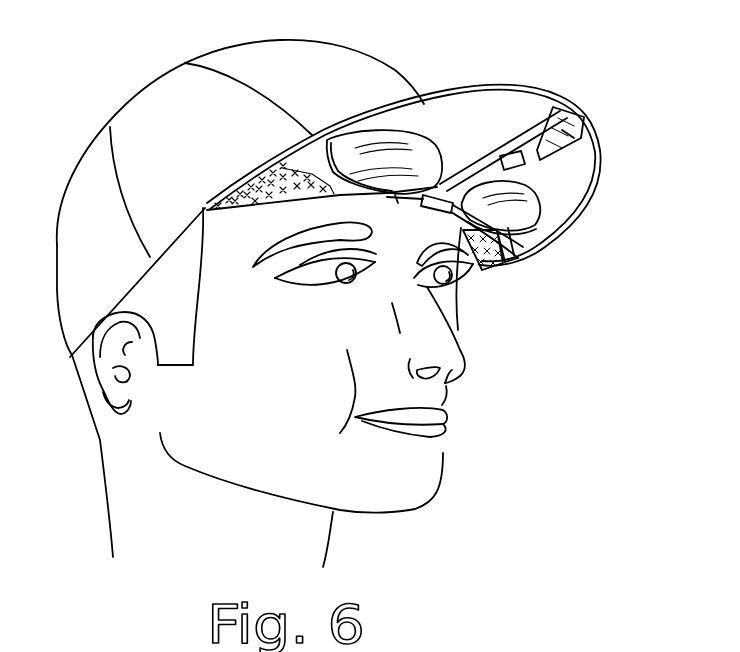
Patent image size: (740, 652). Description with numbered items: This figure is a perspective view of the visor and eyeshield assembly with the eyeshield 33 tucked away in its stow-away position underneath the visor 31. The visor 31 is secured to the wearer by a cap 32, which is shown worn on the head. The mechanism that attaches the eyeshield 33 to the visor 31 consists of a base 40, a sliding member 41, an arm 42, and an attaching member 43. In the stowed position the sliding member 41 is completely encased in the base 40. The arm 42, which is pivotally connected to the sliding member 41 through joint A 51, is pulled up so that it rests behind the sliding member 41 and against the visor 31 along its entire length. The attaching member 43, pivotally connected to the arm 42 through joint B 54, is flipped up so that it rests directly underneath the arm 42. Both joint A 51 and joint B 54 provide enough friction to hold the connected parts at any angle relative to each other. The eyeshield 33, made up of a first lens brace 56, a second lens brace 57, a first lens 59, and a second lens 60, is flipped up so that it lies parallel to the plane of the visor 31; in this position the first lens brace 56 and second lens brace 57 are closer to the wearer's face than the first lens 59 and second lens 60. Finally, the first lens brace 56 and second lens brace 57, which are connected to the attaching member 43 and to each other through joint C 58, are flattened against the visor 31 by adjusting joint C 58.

The visor 31 is at (490, 86).
The cap 32 is at (237, 42).
The eyeshield 33 is at (432, 118).
The base 40 is at (557, 105).
The sliding member 41 is at (568, 143).
The arm 42 is at (478, 172).
The attaching member 43 is at (481, 270).
The joint A 51 is at (512, 167).
The joint B 54 is at (428, 224).
The first lens brace 56 is at (399, 200).
The second lens brace 57 is at (514, 250).
The joint C 58 is at (507, 263).
The first lens 59 is at (377, 140).
The second lens 60 is at (543, 213).